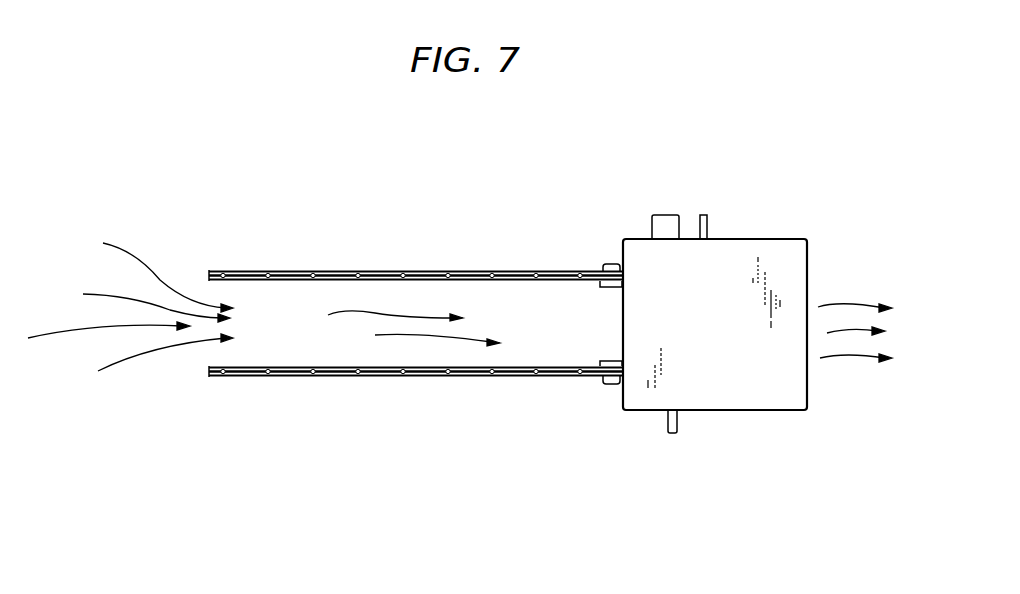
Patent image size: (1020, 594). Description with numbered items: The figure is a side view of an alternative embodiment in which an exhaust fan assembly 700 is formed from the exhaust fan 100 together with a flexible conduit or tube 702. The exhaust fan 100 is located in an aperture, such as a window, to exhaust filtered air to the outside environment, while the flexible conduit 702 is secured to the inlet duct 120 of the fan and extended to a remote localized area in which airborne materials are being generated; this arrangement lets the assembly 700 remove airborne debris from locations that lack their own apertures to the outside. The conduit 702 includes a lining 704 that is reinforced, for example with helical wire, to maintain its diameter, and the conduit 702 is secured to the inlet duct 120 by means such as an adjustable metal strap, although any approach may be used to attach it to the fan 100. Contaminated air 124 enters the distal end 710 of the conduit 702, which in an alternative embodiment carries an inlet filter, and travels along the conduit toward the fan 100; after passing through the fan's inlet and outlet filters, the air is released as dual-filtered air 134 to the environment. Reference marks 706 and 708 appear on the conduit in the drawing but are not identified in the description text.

The exhaust fan 100 is at (727, 332).
The inlet duct 120 is at (601, 288).
The contaminated air 124 is at (135, 352).
The dual-filtered air 134 is at (846, 358).
The exhaust fan assembly 700 is at (612, 468).
The flexible conduit 702 is at (368, 233).
The lining 704 is at (515, 270).
The lower duct wall 706 is at (443, 270).
The fastener 708 is at (608, 263).
The distal end 710 is at (232, 260).